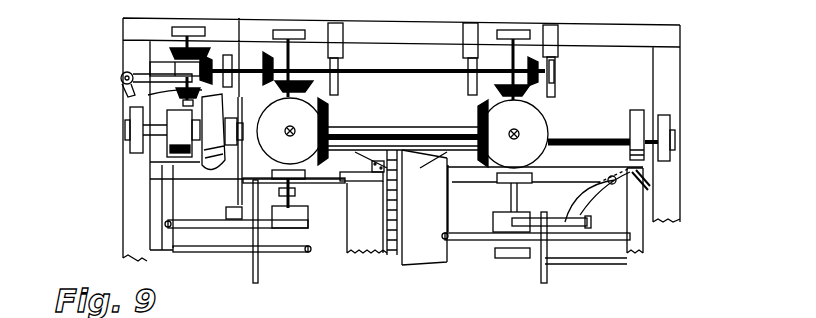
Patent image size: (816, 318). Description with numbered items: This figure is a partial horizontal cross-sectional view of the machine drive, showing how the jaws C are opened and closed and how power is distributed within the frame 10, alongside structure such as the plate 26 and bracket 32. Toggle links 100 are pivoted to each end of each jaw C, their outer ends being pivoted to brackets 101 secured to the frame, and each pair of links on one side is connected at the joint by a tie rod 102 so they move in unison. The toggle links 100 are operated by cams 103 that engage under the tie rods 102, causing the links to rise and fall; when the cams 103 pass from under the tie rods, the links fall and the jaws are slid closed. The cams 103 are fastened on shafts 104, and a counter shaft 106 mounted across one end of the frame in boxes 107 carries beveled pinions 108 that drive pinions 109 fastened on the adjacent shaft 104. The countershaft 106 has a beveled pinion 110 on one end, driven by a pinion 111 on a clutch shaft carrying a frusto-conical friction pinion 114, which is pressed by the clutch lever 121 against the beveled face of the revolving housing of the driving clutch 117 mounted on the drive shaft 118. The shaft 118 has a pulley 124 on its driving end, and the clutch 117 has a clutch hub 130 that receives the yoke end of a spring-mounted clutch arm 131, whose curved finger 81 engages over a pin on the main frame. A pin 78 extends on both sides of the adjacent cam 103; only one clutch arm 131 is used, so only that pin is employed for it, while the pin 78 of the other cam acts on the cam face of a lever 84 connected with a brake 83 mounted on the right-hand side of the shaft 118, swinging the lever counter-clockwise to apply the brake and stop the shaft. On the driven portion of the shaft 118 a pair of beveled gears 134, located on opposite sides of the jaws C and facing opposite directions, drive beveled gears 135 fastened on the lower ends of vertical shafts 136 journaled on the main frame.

The frame 10 is at (676, 213).
The plate 26 is at (390, 256).
The bracket 32 is at (362, 183).
The pin 78 is at (226, 212).
The curved finger 81 is at (292, 190).
The brake 83 is at (640, 98).
The lever 84 is at (580, 202).
The toggle links 100 is at (200, 248).
The brackets 101 is at (163, 217).
The tie rod 102 is at (253, 276).
The cams 103 is at (282, 219).
The shafts 104 is at (511, 200).
The counter shaft 106 is at (428, 79).
The boxes 107 is at (556, 70).
The beveled pinions 108 is at (262, 55).
The pinions 109 is at (283, 91).
The beveled pinion 110 is at (226, 46).
The pinion 111 is at (166, 40).
The frusto-conical friction pinion 114 is at (176, 92).
The driving clutch 117 is at (228, 172).
The drive shaft 118 is at (432, 132).
The clutch lever 121 is at (128, 72).
The pulley 124 is at (165, 150).
The clutch hub 130 is at (258, 127).
The spring-mounted clutch arm 131 is at (256, 143).
The beveled gears 134 is at (330, 113).
The beveled gears 135 is at (532, 122).
The vertical shafts 136 is at (520, 135).
The jaws C is at (365, 253).